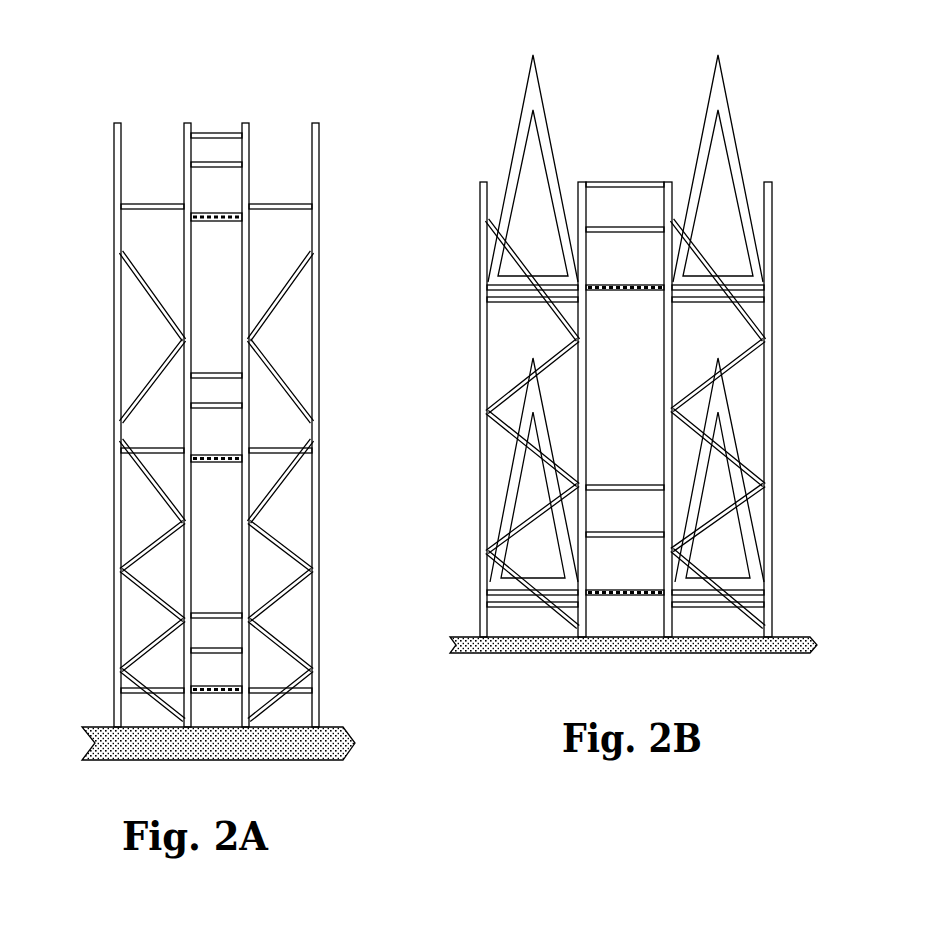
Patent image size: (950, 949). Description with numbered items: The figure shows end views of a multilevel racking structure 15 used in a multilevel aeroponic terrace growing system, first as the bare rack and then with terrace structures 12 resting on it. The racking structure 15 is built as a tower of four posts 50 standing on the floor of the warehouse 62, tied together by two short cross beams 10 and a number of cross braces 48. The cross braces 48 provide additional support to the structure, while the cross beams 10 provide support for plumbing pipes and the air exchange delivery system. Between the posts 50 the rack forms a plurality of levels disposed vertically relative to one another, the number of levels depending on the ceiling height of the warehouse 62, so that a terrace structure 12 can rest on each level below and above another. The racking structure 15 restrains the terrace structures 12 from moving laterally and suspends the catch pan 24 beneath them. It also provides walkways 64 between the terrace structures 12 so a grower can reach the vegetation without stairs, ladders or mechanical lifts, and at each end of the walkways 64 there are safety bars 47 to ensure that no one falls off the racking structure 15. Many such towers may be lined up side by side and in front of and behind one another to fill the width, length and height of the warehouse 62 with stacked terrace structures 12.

In FIG. 2A, the short cross beam 10 is at (157, 205).
In FIG. 2B, the short cross beam 10 is at (523, 287).
In FIG. 2B, the terrace structure 12 is at (695, 140).
In FIG. 2A, the multilevel racking structure 15 is at (235, 379).
In FIG. 2B, the catch pan 24 is at (523, 298).
In FIG. 2A, the safety bar 47 is at (232, 165).
In FIG. 2B, the safety bar 47 is at (632, 227).
In FIG. 2A, the cross brace 48 is at (285, 295).
In FIG. 2B, the cross brace 48 is at (748, 300).
In FIG. 2A, the post 50 is at (115, 310).
In FIG. 2B, the post 50 is at (773, 405).
In FIG. 2A, the warehouse 62 is at (218, 743).
In FIG. 2B, the warehouse 62 is at (718, 653).
In FIG. 2A, the walkway 64 is at (230, 215).
In FIG. 2B, the walkway 64 is at (637, 285).